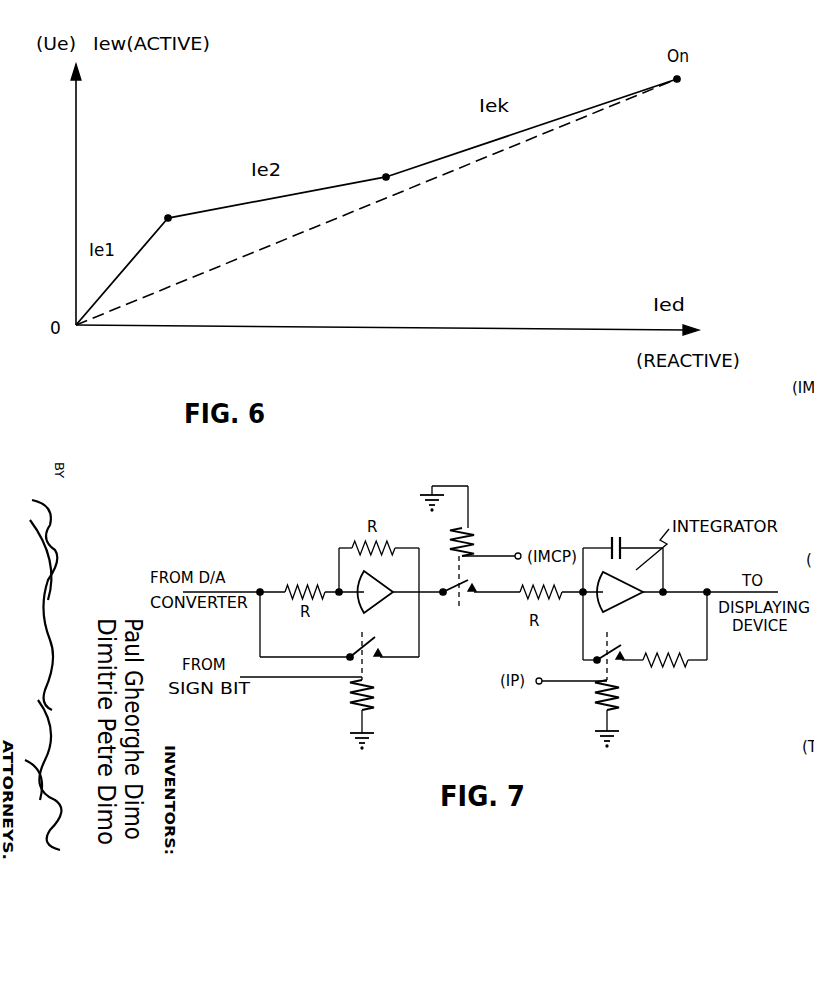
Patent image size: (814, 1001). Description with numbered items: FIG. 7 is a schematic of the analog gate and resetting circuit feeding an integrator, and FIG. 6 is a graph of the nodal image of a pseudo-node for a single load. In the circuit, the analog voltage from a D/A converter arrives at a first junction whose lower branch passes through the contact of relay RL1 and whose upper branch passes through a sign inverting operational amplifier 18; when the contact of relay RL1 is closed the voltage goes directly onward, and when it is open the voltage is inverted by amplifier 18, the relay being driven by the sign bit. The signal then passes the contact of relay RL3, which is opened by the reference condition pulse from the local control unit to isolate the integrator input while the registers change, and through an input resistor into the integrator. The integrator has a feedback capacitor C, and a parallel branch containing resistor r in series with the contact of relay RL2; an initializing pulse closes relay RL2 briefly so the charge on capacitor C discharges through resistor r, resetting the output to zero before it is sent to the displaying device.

The sign inverting operational amplifier 18 is at (374, 597).
The relay RL1 is at (384, 690).
The relay RL2 is at (598, 689).
The relay RL3 is at (470, 546).
The capacitor C is at (623, 555).
The resistor r is at (664, 648).